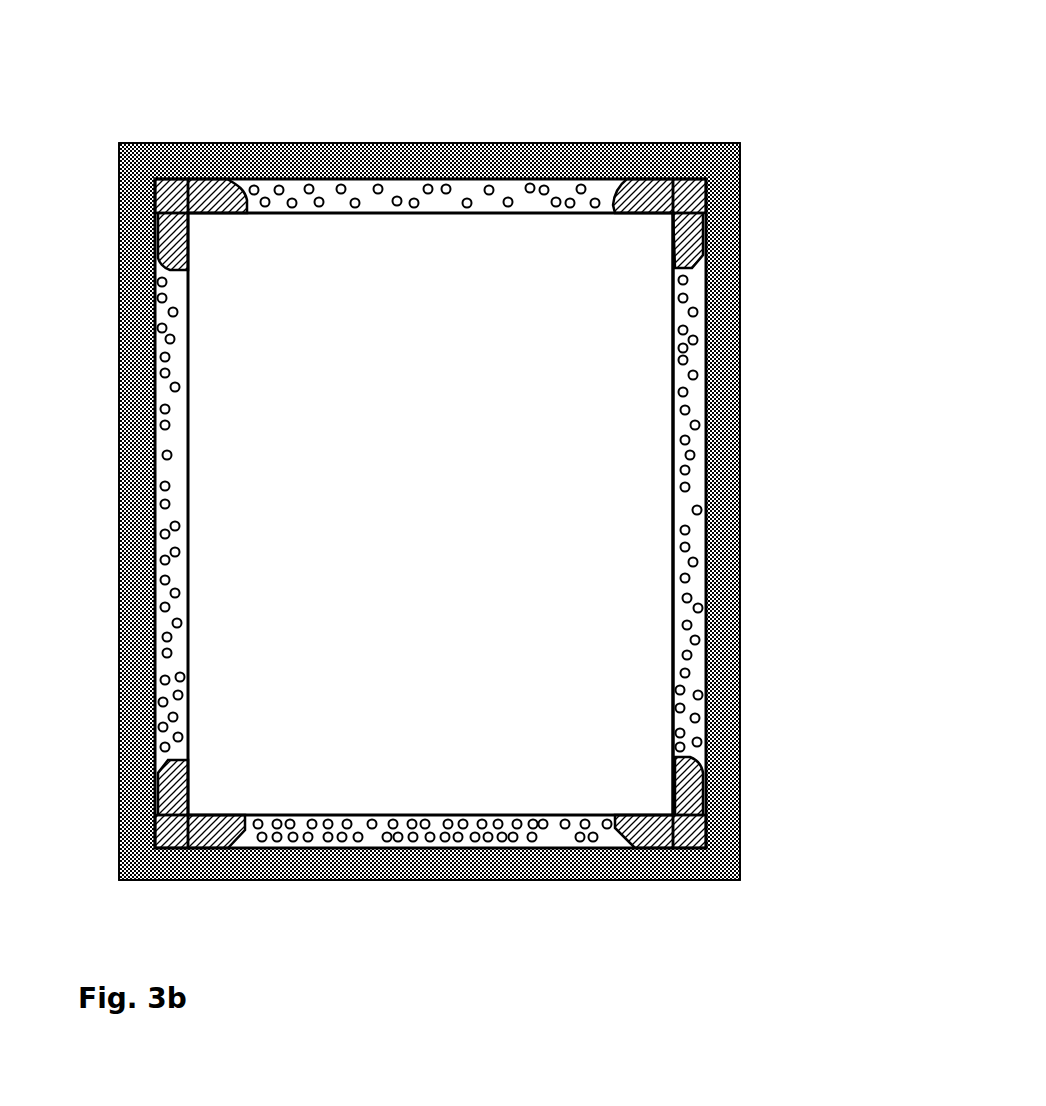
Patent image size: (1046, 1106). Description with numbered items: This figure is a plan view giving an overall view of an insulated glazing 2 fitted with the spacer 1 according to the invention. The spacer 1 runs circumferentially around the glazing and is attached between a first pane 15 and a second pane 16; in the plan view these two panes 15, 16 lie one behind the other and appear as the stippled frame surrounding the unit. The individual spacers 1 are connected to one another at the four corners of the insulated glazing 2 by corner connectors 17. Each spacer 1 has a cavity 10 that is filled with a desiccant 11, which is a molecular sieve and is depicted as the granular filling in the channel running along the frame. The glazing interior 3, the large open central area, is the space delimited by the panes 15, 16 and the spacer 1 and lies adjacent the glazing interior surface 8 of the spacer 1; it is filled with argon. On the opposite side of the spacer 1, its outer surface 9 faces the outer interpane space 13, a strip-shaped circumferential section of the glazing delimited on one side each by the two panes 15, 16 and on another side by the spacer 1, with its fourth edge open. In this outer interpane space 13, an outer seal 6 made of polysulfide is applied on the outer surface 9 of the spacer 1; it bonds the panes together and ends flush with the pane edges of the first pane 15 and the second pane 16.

The spacer 1 is at (695, 288).
The insulated glazing 2 is at (180, 116).
The glazing interior 3 is at (497, 242).
The outer seal 6 is at (133, 707).
The glazing interior surface 8 is at (672, 498).
The outer surface 9 is at (707, 497).
The cavity 10 is at (695, 679).
The desiccant 11 is at (695, 562).
The outer interpane space 13 is at (140, 643).
The first pane 15 is at (740, 383).
The second pane 16 is at (740, 383).
The corner connectors 17 is at (683, 795).